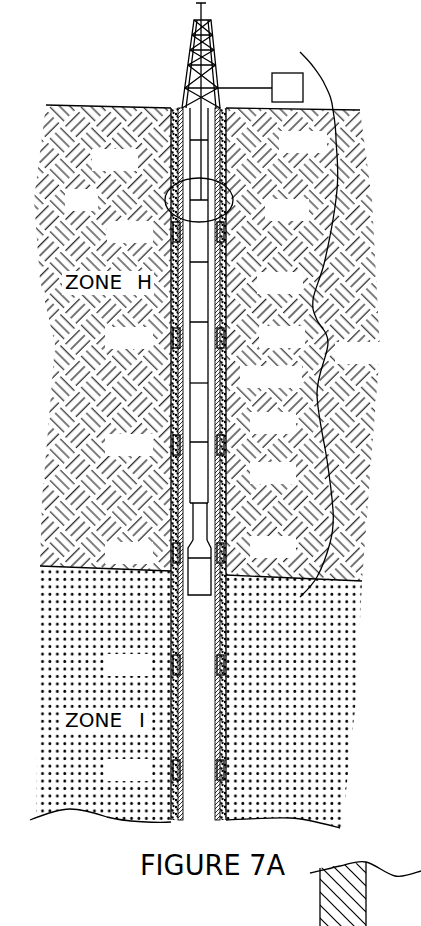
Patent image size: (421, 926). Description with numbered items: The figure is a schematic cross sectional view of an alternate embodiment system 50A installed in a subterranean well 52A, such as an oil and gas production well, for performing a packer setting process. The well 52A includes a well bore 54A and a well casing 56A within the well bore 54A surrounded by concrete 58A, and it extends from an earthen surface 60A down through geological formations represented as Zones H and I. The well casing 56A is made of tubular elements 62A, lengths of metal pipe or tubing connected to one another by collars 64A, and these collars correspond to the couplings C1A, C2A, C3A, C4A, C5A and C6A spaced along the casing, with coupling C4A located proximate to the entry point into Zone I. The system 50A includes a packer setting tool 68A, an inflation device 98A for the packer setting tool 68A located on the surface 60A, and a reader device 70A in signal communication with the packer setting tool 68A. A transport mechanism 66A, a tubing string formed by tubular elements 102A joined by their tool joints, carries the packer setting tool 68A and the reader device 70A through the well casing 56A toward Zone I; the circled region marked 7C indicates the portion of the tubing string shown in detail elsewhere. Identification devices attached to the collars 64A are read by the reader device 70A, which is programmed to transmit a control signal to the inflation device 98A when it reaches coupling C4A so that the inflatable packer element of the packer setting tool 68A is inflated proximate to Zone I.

The subterranean well 52A is at (170, 104).
The inflation device 98A is at (282, 74).
The earthen surface 60A is at (305, 109).
The well bore 54A is at (230, 150).
The concrete 58A is at (213, 177).
The well casing 56A is at (222, 247).
The transport mechanism 66A is at (190, 150).
The tubular elements 62A is at (223, 298).
The tubular elements 102A is at (203, 392).
The detail region 7C is at (165, 199).
The reader device 70A is at (206, 506).
The packer setting tool 68A is at (203, 578).
The system 50A is at (326, 343).
The collars 64A is at (222, 442).
The coupling C1A is at (176, 232).
The coupling C2A is at (176, 338).
The coupling C3A is at (176, 445).
The coupling C4A is at (176, 553).
The coupling C5A is at (176, 665).
The coupling C6A is at (176, 770).